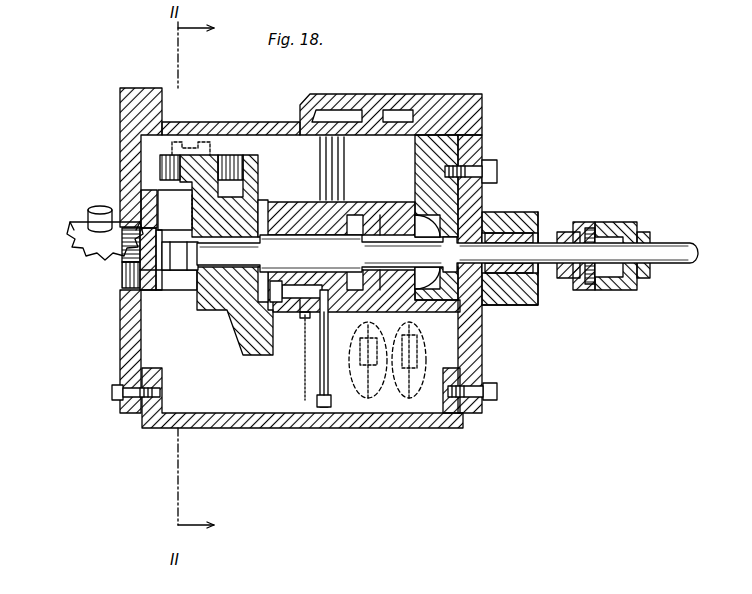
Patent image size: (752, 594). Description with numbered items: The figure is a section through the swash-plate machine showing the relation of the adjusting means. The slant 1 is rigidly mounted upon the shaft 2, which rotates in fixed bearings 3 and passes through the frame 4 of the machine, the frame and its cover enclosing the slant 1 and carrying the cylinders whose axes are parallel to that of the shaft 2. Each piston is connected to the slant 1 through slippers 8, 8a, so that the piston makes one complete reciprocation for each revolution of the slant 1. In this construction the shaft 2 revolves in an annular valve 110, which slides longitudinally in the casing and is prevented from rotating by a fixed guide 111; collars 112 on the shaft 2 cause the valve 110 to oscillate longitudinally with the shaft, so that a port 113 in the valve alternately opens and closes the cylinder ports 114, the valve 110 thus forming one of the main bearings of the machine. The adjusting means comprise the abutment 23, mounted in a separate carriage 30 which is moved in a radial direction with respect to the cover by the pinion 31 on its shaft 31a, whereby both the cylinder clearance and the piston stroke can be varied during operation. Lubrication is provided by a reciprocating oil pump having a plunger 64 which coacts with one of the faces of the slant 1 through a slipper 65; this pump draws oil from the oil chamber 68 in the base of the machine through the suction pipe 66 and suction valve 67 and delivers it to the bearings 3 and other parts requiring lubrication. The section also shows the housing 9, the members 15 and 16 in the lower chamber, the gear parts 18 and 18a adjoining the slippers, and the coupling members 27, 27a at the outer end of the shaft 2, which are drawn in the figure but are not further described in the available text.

The slant 1 is at (240, 347).
The shaft 2 is at (372, 251).
The fixed bearings 3 is at (515, 215).
The frame 4 is at (298, 128).
The slipper 8 is at (178, 155).
The slipper 8a is at (226, 155).
The housing 9 is at (483, 361).
The rod 15 is at (329, 393).
The cam 16 is at (418, 382).
The gear 18 is at (192, 155).
The gear 18a is at (300, 372).
The abutment 23 is at (168, 228).
The coupling 27 is at (577, 224).
The coupling member 27a is at (632, 222).
The carriage 30 is at (140, 258).
The pinion 31 is at (70, 226).
The shaft 31a is at (100, 212).
The plunger 64 is at (325, 306).
The slipper 65 is at (268, 303).
The suction pipe 66 is at (300, 394).
The suction valve 67 is at (325, 408).
The oil chamber 68 is at (372, 383).
The annular valve 110 is at (382, 213).
The fixed guide 111 is at (361, 213).
The collars 112 is at (512, 304).
The port 113 is at (462, 216).
The cylinder ports 114 is at (405, 202).